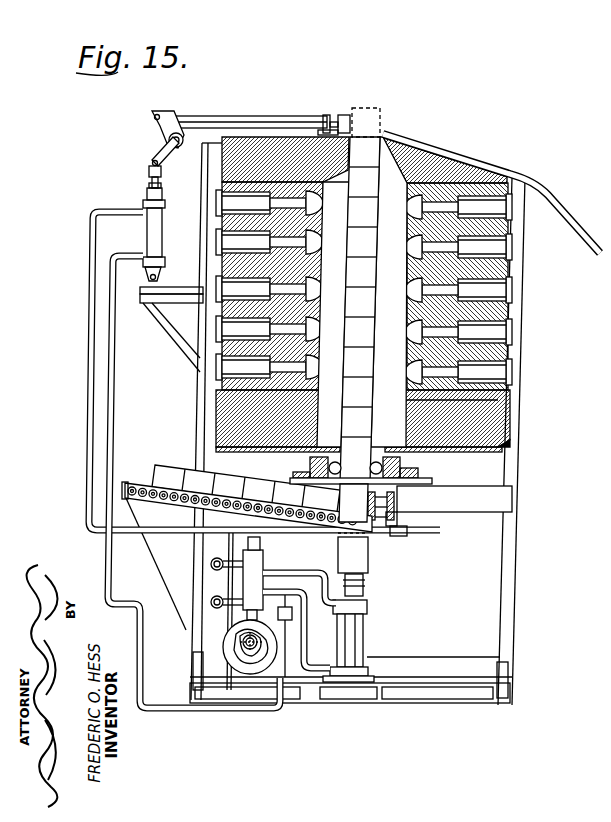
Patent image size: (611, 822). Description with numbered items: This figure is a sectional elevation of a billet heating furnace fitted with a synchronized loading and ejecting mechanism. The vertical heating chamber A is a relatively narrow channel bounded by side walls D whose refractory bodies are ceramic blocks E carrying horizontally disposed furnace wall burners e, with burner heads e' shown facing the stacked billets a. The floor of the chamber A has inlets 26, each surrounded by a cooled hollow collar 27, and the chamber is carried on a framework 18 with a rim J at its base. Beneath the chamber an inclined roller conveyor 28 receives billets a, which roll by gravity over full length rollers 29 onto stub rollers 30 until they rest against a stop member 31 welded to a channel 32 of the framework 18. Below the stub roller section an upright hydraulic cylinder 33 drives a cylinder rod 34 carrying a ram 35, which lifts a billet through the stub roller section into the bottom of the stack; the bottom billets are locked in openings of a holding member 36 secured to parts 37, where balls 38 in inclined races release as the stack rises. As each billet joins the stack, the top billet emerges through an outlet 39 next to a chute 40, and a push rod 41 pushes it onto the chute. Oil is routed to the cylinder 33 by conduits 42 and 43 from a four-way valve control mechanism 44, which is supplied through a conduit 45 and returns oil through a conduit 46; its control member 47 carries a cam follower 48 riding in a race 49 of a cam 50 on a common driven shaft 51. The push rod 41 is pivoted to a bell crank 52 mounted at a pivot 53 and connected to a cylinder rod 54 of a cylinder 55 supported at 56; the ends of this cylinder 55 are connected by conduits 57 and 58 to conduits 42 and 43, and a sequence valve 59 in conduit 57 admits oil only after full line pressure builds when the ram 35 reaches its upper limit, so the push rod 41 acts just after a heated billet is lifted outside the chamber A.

The framework 18 is at (507, 534).
The inlet 26 is at (336, 450).
The hollow collar 27 is at (440, 449).
The roller conveyor 28 is at (160, 508).
The full length roller 29 is at (140, 484).
The stub roller 30 is at (333, 523).
The stop member 31 is at (397, 523).
The channel 32 is at (397, 503).
The hydraulic cylinder 33 is at (353, 638).
The cylinder rod 34 is at (362, 582).
The ram 35 is at (357, 566).
The holding member 36 is at (306, 463).
The holding member support part 37 is at (405, 478).
The ball 38 is at (335, 474).
The outlet 39 is at (386, 136).
The chute 40 is at (518, 172).
The push rod 41 is at (260, 117).
The conduit 42 is at (305, 632).
The conduit 43 is at (312, 577).
The valve control mechanism 44 is at (257, 563).
The supply conduit 45 is at (217, 603).
The return conduit 46 is at (212, 562).
The control member 47 is at (247, 630).
The cam follower 48 is at (245, 648).
The cam race 49 is at (252, 660).
The cam 50 is at (270, 663).
The shaft 51 is at (248, 657).
The bell crank 52 is at (160, 128).
The pivot 53 is at (170, 142).
The cylinder rod 54 is at (152, 178).
The cylinder 55 is at (155, 238).
The cylinder support 56 is at (165, 290).
The conduit 57 is at (117, 390).
The conduit 58 is at (92, 350).
The sequence valve 59 is at (296, 636).
The heating chamber A is at (393, 192).
The billet a is at (377, 322).
The side wall D is at (503, 410).
The ceramic block E is at (503, 352).
The furnace wall burner e is at (386, 287).
The piston head e' is at (403, 289).
The rim J is at (483, 441).